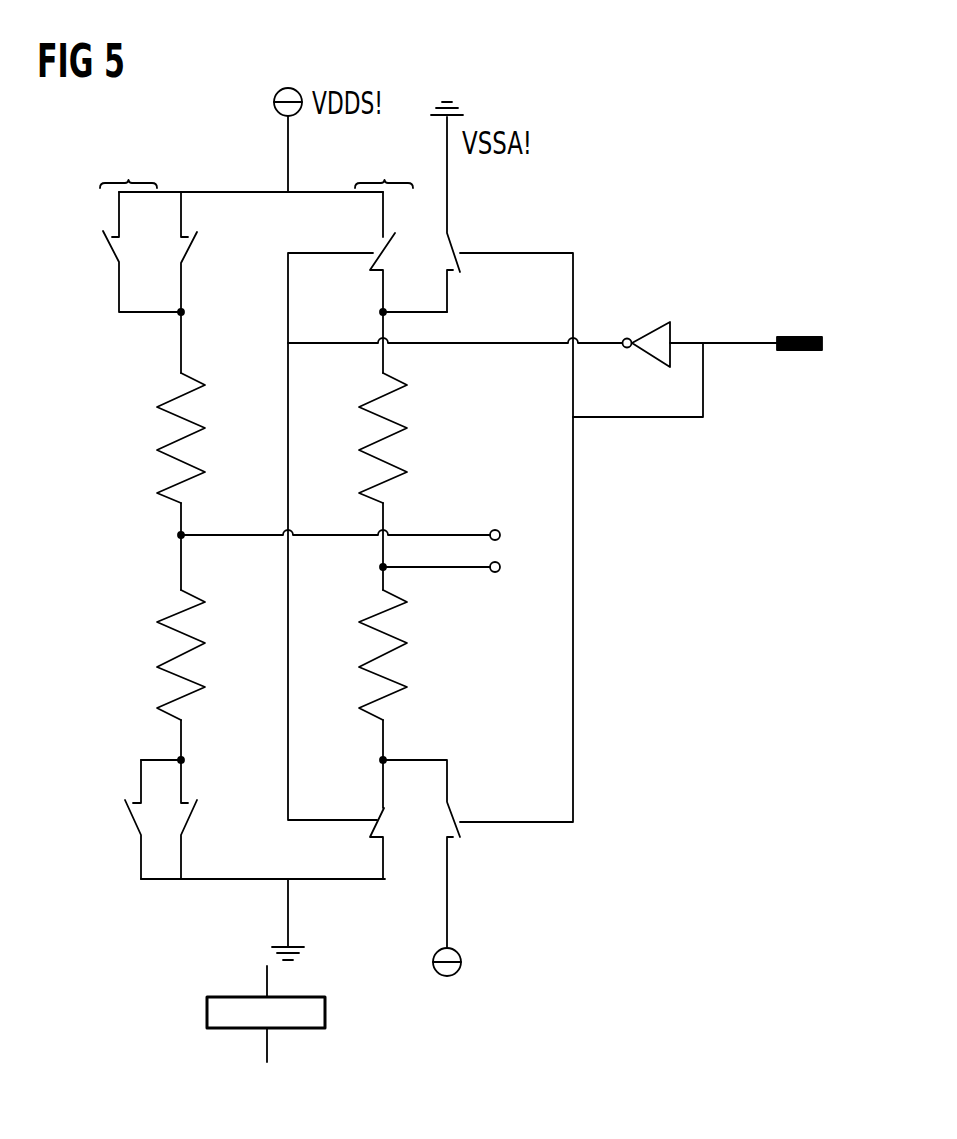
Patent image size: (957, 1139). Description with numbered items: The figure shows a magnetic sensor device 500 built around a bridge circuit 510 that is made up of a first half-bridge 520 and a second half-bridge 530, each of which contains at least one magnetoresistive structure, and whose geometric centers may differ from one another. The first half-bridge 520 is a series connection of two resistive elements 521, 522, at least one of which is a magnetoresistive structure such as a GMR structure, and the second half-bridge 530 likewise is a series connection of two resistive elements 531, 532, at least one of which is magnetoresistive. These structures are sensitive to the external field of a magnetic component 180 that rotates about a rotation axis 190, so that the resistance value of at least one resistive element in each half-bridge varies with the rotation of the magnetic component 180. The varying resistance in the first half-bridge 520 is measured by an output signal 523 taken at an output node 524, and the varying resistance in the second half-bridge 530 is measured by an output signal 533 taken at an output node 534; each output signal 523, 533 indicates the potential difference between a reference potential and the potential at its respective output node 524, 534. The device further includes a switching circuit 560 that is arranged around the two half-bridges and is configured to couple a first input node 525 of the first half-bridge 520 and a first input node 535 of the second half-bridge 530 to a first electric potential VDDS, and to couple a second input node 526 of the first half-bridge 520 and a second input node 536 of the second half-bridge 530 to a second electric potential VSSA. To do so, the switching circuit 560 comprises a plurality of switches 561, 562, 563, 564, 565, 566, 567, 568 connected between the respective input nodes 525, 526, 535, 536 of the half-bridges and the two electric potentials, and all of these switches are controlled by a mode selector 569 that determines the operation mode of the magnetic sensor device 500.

The magnetic sensor device 500 is at (750, 927).
The bridge circuit 510 is at (108, 913).
The first half-bridge 520 is at (194, 169).
The second half-bridge 530 is at (350, 169).
The resistive element 521 is at (172, 437).
The resistive element 522 is at (172, 693).
The output signal 523 is at (519, 537).
The output node 524 is at (178, 535).
The first input node 525 is at (184, 312).
The second input node 526 is at (184, 760).
The resistive element 531 is at (392, 415).
The resistive element 532 is at (388, 668).
The output signal 533 is at (519, 568).
The output node 534 is at (380, 567).
The first input node 535 is at (380, 312).
The second input node 536 is at (380, 760).
The switching circuit 560 is at (626, 201).
The switch 561 is at (113, 249).
The switch 562 is at (190, 254).
The switch 563 is at (370, 262).
The switch 564 is at (462, 260).
The switch 565 is at (135, 818).
The switch 566 is at (190, 826).
The switch 567 is at (373, 830).
The switch 568 is at (463, 828).
The mode selector 569 is at (803, 336).
The magnetic component 180 is at (206, 1010).
The rotation axis 190 is at (266, 1050).